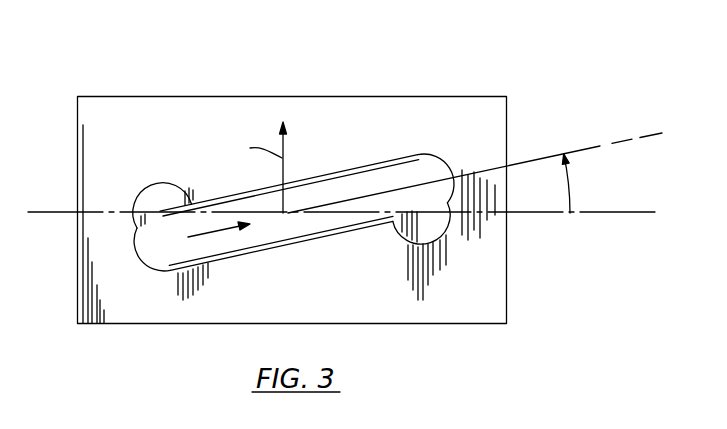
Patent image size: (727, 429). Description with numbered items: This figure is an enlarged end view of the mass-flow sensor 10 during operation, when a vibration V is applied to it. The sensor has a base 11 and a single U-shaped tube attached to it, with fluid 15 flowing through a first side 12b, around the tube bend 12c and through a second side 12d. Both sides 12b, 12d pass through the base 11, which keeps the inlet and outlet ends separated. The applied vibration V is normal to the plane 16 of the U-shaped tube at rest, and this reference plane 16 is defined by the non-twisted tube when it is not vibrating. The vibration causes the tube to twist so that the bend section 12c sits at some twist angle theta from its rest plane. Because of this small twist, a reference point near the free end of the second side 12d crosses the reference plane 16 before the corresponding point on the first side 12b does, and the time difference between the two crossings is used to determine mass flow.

The mass-flow sensor 10 is at (340, 168).
The base 11 is at (153, 105).
The first side 12b is at (157, 195).
The tube bend 12c is at (322, 183).
The second side 12d is at (430, 232).
The fluid 15 is at (212, 235).
The plane 16 is at (627, 214).